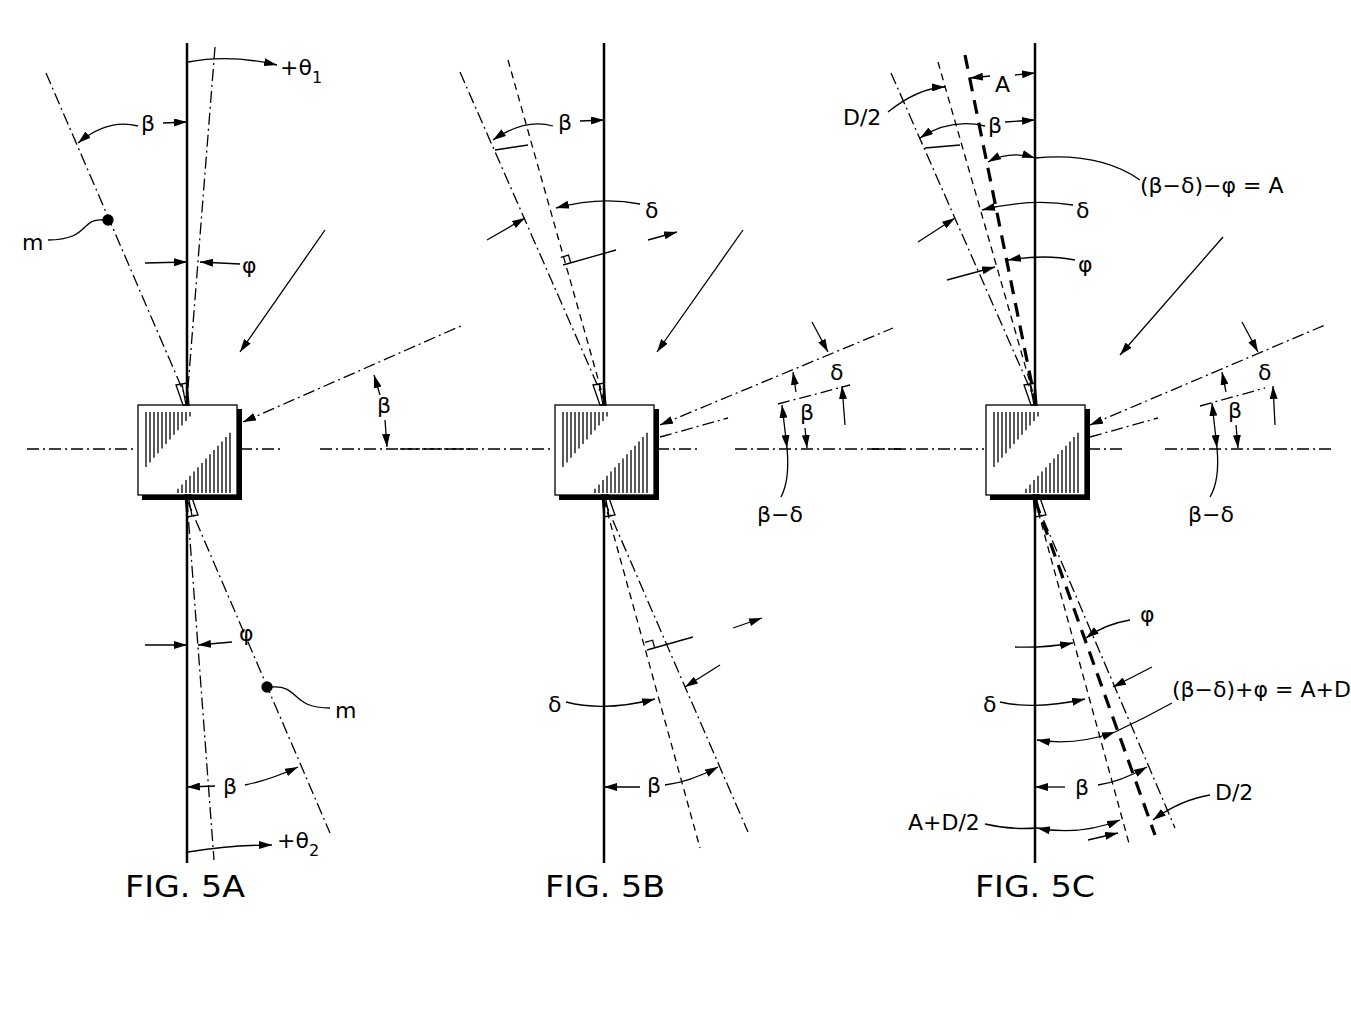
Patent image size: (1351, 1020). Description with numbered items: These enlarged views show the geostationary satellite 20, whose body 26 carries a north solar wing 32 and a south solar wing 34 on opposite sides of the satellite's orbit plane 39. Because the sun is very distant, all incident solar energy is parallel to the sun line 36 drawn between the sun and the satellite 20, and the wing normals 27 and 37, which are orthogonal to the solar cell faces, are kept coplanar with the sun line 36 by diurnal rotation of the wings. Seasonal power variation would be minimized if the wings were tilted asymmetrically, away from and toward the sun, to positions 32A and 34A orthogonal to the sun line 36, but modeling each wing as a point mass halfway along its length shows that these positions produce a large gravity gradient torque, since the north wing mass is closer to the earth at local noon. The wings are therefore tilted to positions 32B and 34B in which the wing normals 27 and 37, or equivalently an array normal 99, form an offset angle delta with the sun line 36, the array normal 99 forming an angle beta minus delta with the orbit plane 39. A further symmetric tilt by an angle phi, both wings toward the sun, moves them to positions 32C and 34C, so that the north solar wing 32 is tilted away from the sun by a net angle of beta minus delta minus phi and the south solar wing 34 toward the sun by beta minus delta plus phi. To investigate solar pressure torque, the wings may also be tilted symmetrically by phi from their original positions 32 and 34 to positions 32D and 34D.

In FIG. 5A, the geostationary satellite 20 is at (296, 280).
In FIG. 5B, the geostationary satellite 20 is at (713, 280).
In FIG. 5C, the geostationary satellite 20 is at (1185, 283).
In FIG. 5A, the satellite body 26 is at (137, 425).
In FIG. 5B, the satellite body 26 is at (553, 425).
In FIG. 5C, the satellite body 26 is at (984, 425).
In FIG. 5B, the wing normal 27 is at (619, 248).
In FIG. 5A, the north solar wing 32 is at (187, 103).
In FIG. 5B, the north solar wing 32 is at (604, 103).
In FIG. 5C, the north solar wing 32 is at (1035, 103).
In FIG. 5A, the north solar wing asymmetrically tilted position 32A is at (72, 137).
In FIG. 5B, the north solar wing asymmetrically tilted position 32A is at (472, 107).
In FIG. 5C, the north solar wing asymmetrically tilted position 32A is at (900, 95).
In FIG. 5B, the north solar wing offset position 32B is at (495, 150).
In FIG. 5C, the north solar wing offset position 32B is at (925, 152).
In FIG. 5C, the north solar wing symmetrically tilted position 32C is at (975, 58).
In FIG. 5A, the north solar wing symmetric tilt position 32D is at (208, 163).
In FIG. 5A, the south solar wing 34 is at (187, 722).
In FIG. 5B, the south solar wing 34 is at (604, 722).
In FIG. 5C, the south solar wing 34 is at (1035, 722).
In FIG. 5A, the south solar wing asymmetrically tilted position 34A is at (318, 805).
In FIG. 5B, the south solar wing asymmetrically tilted position 34A is at (737, 805).
In FIG. 5C, the south solar wing asymmetrically tilted position 34A is at (1160, 787).
In FIG. 5B, the south solar wing offset position 34B is at (688, 805).
In FIG. 5C, the south solar wing offset position 34B is at (1115, 797).
In FIG. 5C, the south solar wing symmetrically tilted position 34C is at (1163, 835).
In FIG. 5A, the south solar wing symmetric tilt position 34D is at (187, 783).
In FIG. 5A, the sun line 36 is at (353, 373).
In FIG. 5B, the sun line 36 is at (776, 376).
In FIG. 5C, the sun line 36 is at (1207, 375).
In FIG. 5B, the wing normal 37 is at (703, 635).
In FIG. 5A, the orbit plane 39 is at (248, 450).
In FIG. 5B, the orbit plane 39 is at (652, 450).
In FIG. 5C, the orbit plane 39 is at (1103, 450).
In FIG. 5B, the array normal 99 is at (755, 411).
In FIG. 5C, the array normal 99 is at (1177, 412).